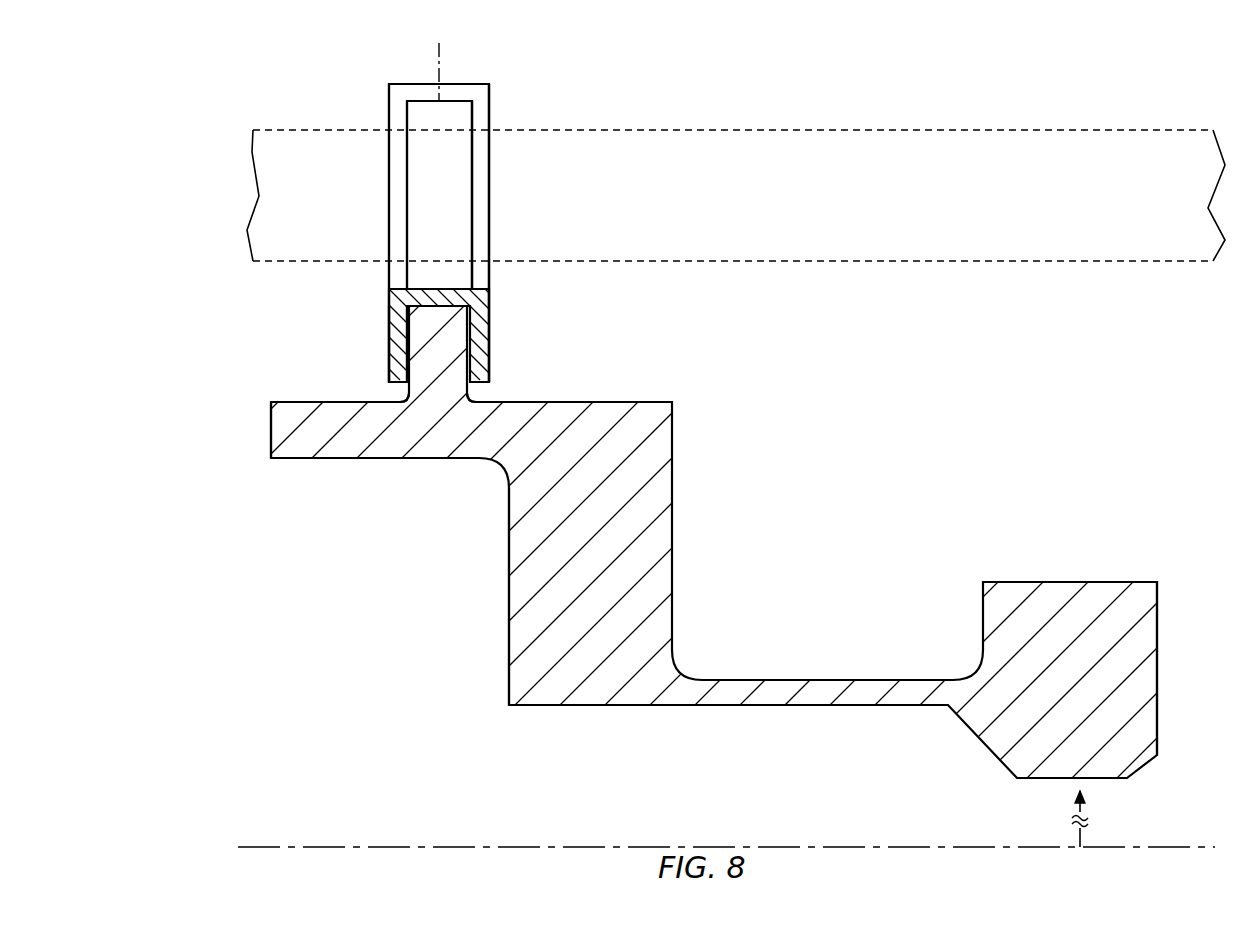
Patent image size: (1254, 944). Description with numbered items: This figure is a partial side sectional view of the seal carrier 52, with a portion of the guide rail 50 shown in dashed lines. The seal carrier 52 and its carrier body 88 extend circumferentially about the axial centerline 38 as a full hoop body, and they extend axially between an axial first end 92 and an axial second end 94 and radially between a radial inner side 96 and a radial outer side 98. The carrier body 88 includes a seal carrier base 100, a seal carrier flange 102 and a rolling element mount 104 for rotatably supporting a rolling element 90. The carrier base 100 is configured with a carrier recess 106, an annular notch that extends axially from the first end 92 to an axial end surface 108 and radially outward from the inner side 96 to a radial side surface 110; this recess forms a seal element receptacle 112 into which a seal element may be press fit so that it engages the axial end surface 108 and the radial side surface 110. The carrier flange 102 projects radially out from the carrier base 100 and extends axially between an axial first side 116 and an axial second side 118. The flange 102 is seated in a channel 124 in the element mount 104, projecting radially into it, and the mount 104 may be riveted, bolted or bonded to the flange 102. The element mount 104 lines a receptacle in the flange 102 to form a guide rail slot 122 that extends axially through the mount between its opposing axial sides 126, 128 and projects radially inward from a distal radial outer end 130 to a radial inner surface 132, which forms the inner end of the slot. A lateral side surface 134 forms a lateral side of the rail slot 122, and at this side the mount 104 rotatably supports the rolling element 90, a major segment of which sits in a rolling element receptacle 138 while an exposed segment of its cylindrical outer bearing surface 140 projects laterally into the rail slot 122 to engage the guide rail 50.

The axial centerline 38 is at (278, 847).
The guide rail 50 is at (1150, 128).
The seal carrier 52 is at (197, 93).
The carrier body 88 is at (962, 457).
The rolling element 90 is at (472, 175).
The axial first end 92 is at (271, 437).
The axial second end 94 is at (1157, 628).
The radial inner side 96 is at (1110, 780).
The radial outer side 98 is at (481, 63).
The seal carrier base 100 is at (681, 399).
The seal carrier flange 102 is at (472, 341).
The rolling element mount 104 is at (389, 104).
The carrier recess 106 is at (240, 649).
The axial end surface 108 is at (509, 598).
The radial side surface 110 is at (357, 458).
The seal element receptacle 112 is at (318, 624).
The axial first side 116 is at (403, 394).
The axial second side 118 is at (473, 393).
The guide rail slot 122 is at (407, 223).
The channel 124 is at (405, 327).
The axial side 126 is at (389, 176).
The axial side 128 is at (489, 203).
The distal radial outer end 130 is at (470, 84).
The radial inner surface 132 is at (482, 290).
The lateral side surface 134 is at (480, 116).
The rolling element receptacle 138 is at (407, 142).
The outer bearing surface 140 is at (450, 227).